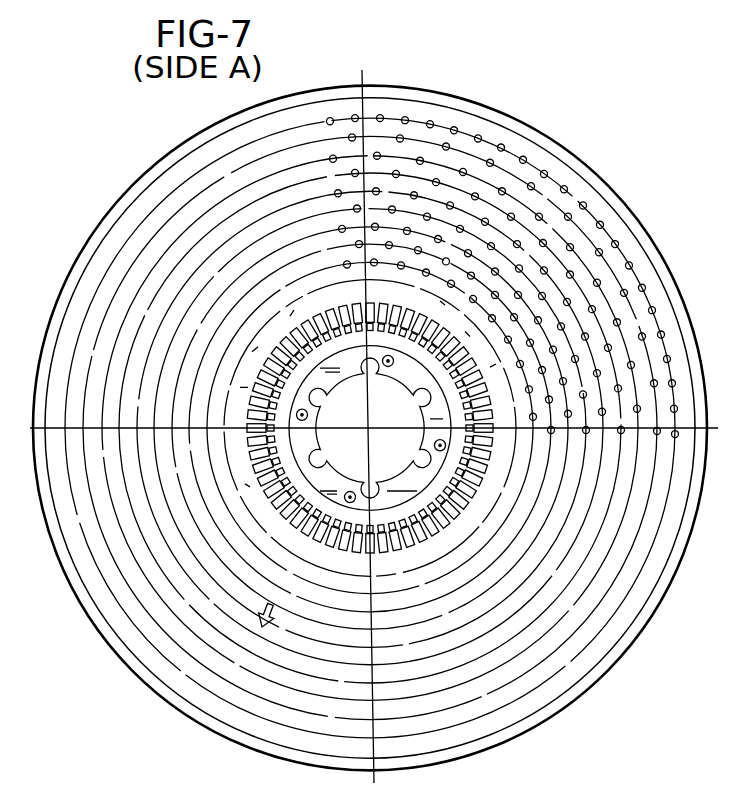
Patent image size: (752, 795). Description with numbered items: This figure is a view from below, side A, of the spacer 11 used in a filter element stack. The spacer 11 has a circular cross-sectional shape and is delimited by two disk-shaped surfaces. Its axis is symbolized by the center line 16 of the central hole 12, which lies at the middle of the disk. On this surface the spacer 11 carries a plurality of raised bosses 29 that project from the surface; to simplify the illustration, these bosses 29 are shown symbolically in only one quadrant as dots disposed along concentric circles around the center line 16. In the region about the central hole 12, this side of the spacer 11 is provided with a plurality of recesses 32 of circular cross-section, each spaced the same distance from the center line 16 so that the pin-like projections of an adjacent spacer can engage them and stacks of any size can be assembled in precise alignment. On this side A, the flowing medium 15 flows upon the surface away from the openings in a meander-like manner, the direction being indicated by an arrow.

The spacer 11 is at (529, 118).
The central hole 12 is at (358, 468).
The flowing medium 15 is at (270, 603).
The center line 16 is at (368, 427).
The raised bosses 29 is at (568, 198).
The recesses 32 is at (388, 368).